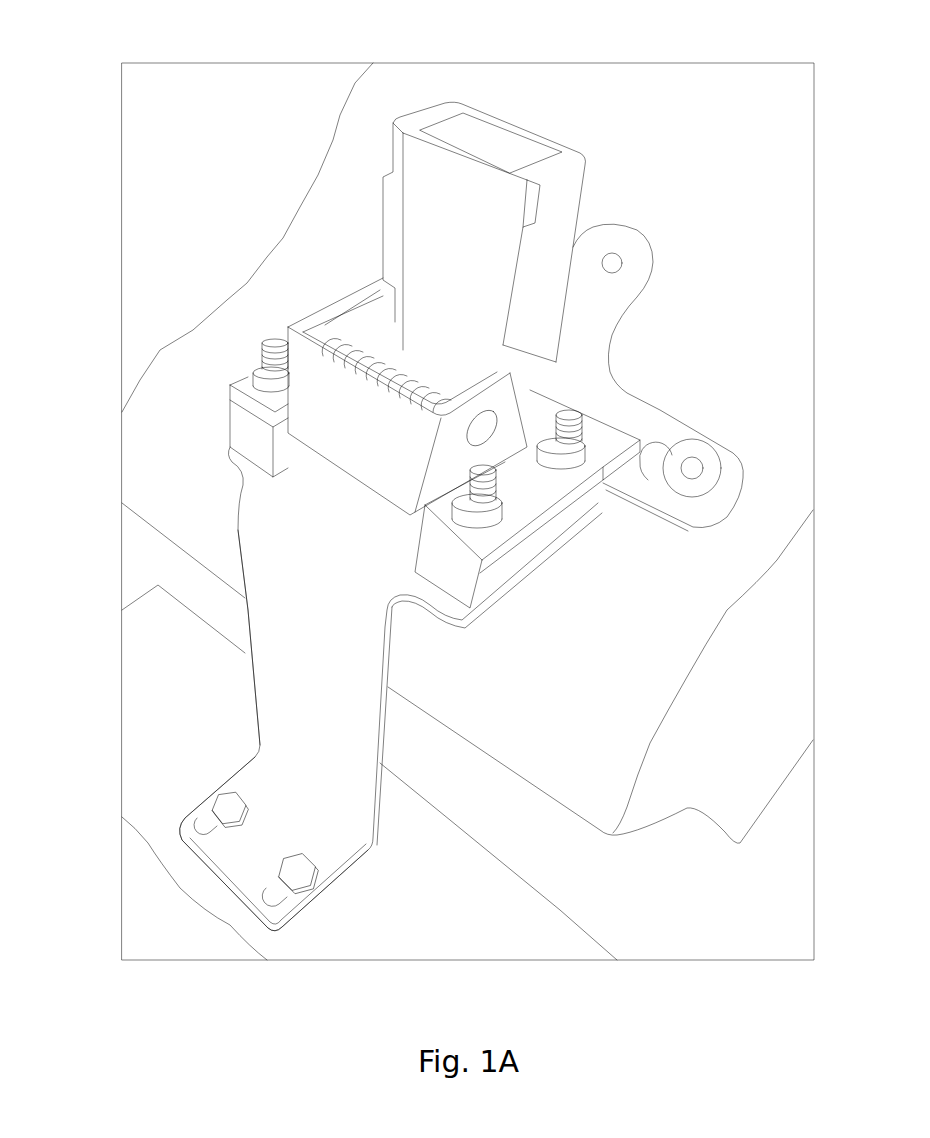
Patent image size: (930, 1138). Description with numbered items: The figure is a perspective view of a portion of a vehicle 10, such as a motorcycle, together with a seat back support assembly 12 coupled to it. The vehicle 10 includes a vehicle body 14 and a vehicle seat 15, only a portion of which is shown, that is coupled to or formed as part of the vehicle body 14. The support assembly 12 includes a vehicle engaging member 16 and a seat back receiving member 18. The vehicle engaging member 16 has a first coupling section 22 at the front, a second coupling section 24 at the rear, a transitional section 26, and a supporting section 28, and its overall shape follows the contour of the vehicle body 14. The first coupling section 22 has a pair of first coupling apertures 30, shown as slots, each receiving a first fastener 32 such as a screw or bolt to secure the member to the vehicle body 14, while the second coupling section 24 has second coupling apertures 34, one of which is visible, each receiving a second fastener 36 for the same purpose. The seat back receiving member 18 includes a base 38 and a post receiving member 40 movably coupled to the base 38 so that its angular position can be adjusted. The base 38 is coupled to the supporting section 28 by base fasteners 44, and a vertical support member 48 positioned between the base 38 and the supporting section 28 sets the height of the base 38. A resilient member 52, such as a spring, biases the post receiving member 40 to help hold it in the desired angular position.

The vehicle 10 is at (745, 47).
The seat back support assembly 12 is at (672, 405).
The vehicle body 14 is at (770, 678).
The vehicle seat 15 is at (133, 920).
The vehicle engaging member 16 is at (377, 693).
The seat back receiving member 18 is at (455, 232).
The first coupling section 22 is at (345, 845).
The second coupling section 24 is at (657, 417).
The transitional section 26 is at (272, 690).
The supporting section 28 is at (238, 368).
The first coupling apertures 30 is at (275, 897).
The first fastener 32 is at (225, 805).
The second coupling apertures 34 is at (705, 496).
The second fastener 36 is at (692, 468).
The base 38 is at (527, 533).
The post receiving member 40 is at (438, 232).
The base fastener 44 is at (277, 340).
The vertical support member 48 is at (500, 567).
The resilient member 52 is at (378, 343).